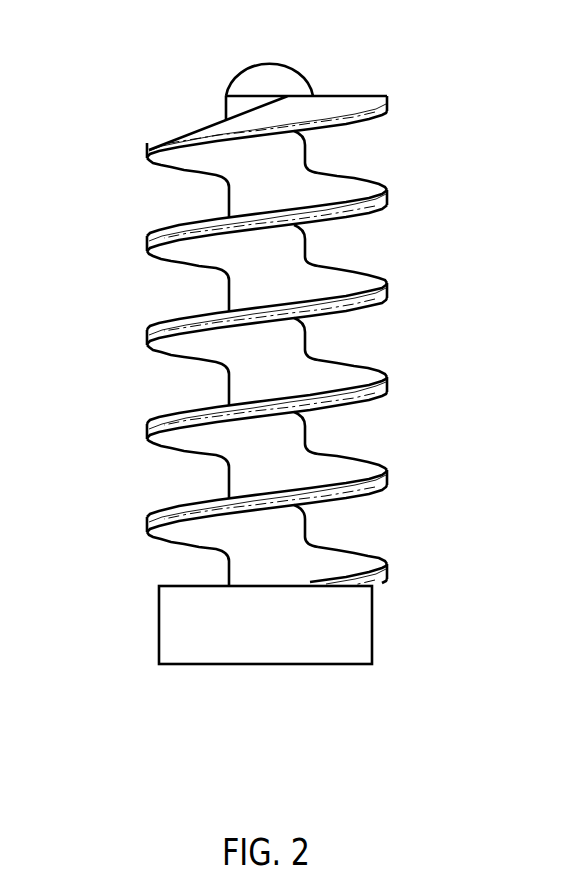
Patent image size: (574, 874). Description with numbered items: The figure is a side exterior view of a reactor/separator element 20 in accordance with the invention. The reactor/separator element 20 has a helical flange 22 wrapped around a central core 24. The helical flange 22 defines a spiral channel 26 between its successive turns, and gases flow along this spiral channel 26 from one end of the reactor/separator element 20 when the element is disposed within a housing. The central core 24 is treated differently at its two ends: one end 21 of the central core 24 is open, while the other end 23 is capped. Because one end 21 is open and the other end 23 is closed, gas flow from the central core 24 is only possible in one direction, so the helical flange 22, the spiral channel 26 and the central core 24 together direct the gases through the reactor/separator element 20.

The reactor/separator element 20 is at (405, 72).
The end of the central core 21 is at (252, 628).
The helical flange 22 is at (170, 340).
The other end of the central core 23 is at (258, 77).
The central core 24 is at (242, 553).
The spiral channel 26 is at (175, 288).